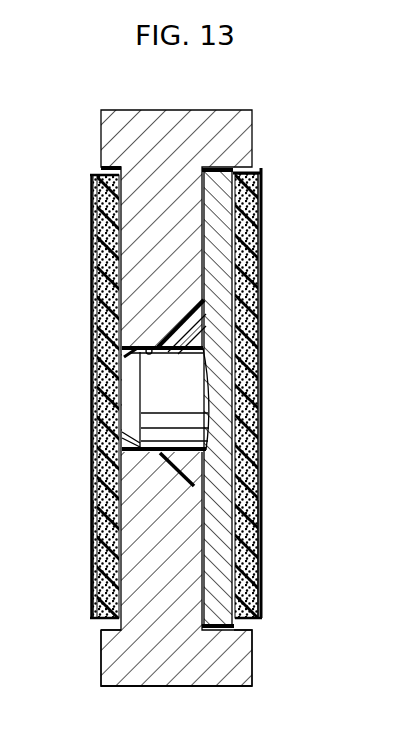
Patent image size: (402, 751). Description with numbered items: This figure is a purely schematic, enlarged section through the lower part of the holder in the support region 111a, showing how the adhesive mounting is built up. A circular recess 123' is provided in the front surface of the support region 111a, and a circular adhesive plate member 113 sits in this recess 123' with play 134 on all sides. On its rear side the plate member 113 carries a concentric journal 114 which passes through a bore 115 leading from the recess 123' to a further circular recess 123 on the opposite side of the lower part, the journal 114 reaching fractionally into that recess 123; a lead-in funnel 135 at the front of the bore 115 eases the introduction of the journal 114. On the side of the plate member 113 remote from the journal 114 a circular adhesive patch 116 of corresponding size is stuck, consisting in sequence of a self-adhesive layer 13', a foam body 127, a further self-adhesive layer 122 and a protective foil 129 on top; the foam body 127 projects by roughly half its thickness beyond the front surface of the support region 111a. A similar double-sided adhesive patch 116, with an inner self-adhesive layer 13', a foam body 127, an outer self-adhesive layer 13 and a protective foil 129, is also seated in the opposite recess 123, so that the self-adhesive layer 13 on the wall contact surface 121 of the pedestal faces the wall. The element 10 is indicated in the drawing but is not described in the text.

The housing block 10 is at (253, 138).
The play 134 is at (250, 170).
The adhesive patch 116 is at (90, 279).
The self-adhesive layer 13' is at (174, 396).
The bore 115 is at (150, 348).
The journal 114 is at (178, 398).
The foam body 127 is at (95, 393).
The self-adhesive layer 13 is at (84, 396).
The further self-adhesive layer 122 is at (262, 435).
The lead-in funnel 135 is at (194, 486).
The protective foil 129 is at (93, 512).
The adhesive plate member 113 is at (218, 563).
The recess 123 is at (83, 406).
The recess 123' is at (249, 631).
The wall contact surface 121 is at (101, 663).
The support region 111a is at (176, 668).